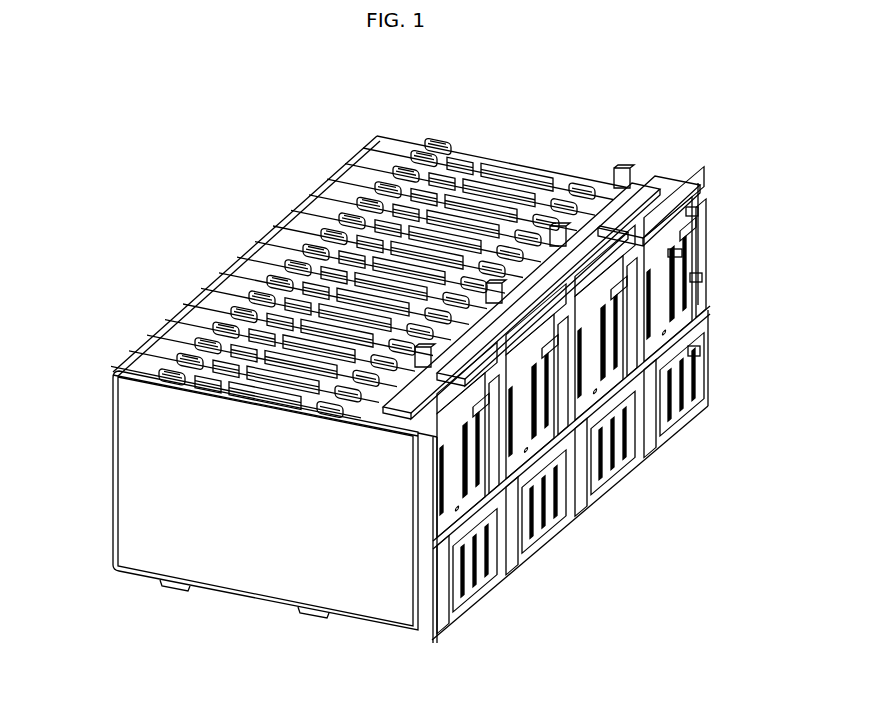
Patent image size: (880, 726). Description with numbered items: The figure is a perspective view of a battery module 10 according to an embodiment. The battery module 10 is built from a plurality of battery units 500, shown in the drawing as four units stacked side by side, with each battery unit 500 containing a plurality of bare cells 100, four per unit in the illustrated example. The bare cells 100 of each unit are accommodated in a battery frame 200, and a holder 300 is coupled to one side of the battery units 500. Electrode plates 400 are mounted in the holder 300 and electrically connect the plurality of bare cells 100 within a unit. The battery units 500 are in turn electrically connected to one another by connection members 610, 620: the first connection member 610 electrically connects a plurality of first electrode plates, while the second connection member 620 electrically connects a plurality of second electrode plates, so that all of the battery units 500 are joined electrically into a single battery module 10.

The battery module 10 is at (46, 88).
The bare cell 100 is at (245, 553).
The battery frame 200 is at (111, 375).
The holder 300 is at (652, 215).
The electrode terminals 400 is at (693, 352).
The battery unit 500 is at (480, 614).
The first connection member 610 is at (523, 250).
The second connection member 620 is at (592, 237).